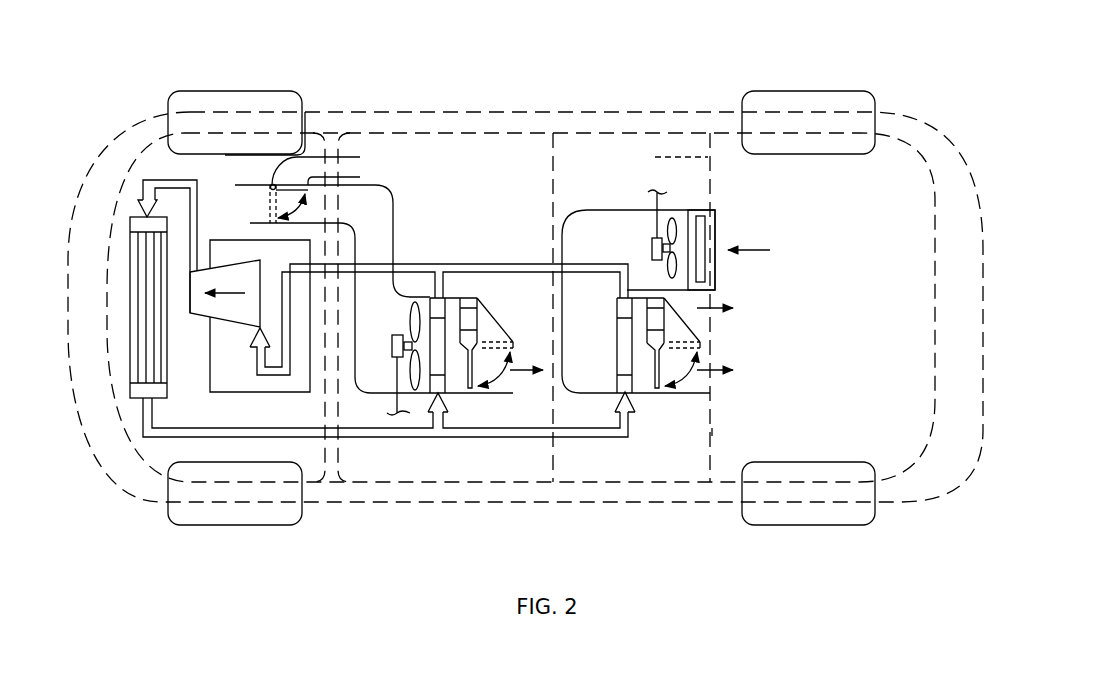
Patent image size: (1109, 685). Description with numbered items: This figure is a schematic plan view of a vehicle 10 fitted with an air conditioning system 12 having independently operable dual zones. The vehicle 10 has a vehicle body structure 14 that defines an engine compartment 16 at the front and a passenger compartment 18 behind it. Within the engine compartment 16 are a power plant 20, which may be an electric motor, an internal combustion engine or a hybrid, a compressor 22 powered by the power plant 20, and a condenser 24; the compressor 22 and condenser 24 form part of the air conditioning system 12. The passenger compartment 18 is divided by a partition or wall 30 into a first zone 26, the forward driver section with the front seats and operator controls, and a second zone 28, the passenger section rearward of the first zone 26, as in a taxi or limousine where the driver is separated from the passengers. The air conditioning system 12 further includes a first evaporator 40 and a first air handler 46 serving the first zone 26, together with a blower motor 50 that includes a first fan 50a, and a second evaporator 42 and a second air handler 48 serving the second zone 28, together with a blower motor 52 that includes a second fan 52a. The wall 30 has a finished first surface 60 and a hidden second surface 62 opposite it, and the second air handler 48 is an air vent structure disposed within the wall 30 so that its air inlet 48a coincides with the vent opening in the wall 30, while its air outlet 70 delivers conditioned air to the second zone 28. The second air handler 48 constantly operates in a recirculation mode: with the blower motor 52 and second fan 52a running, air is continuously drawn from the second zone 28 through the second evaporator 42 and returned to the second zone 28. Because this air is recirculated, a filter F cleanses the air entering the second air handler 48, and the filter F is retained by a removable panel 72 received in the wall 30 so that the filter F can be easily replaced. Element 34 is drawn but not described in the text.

The vehicle 10 is at (340, 52).
The air conditioning system 12 is at (160, 178).
The vehicle body structure 14 is at (683, 108).
The engine compartment 16 is at (160, 150).
The passenger compartment 18 is at (453, 163).
The power plant 20 is at (245, 392).
The compressor 22 is at (232, 277).
The condenser 24 is at (153, 342).
The first zone 26 is at (510, 170).
The second zone 28 is at (897, 173).
The wall 30 is at (666, 158).
The condenser 34 is at (707, 222).
The first evaporator 40 is at (440, 363).
The second evaporator 42 is at (622, 352).
The first air handler 46 is at (397, 227).
The second air handler 48 is at (605, 210).
The air inlet 48a is at (700, 233).
The blower motor 50 is at (392, 341).
The first fan 50a is at (427, 300).
The blower motor 52 is at (652, 248).
The second fan 52a is at (680, 208).
The first surface 60 is at (712, 432).
The second surface 62 is at (708, 452).
The air outlet 70 is at (697, 385).
The removable panel 72 is at (717, 280).
The filter F is at (700, 268).